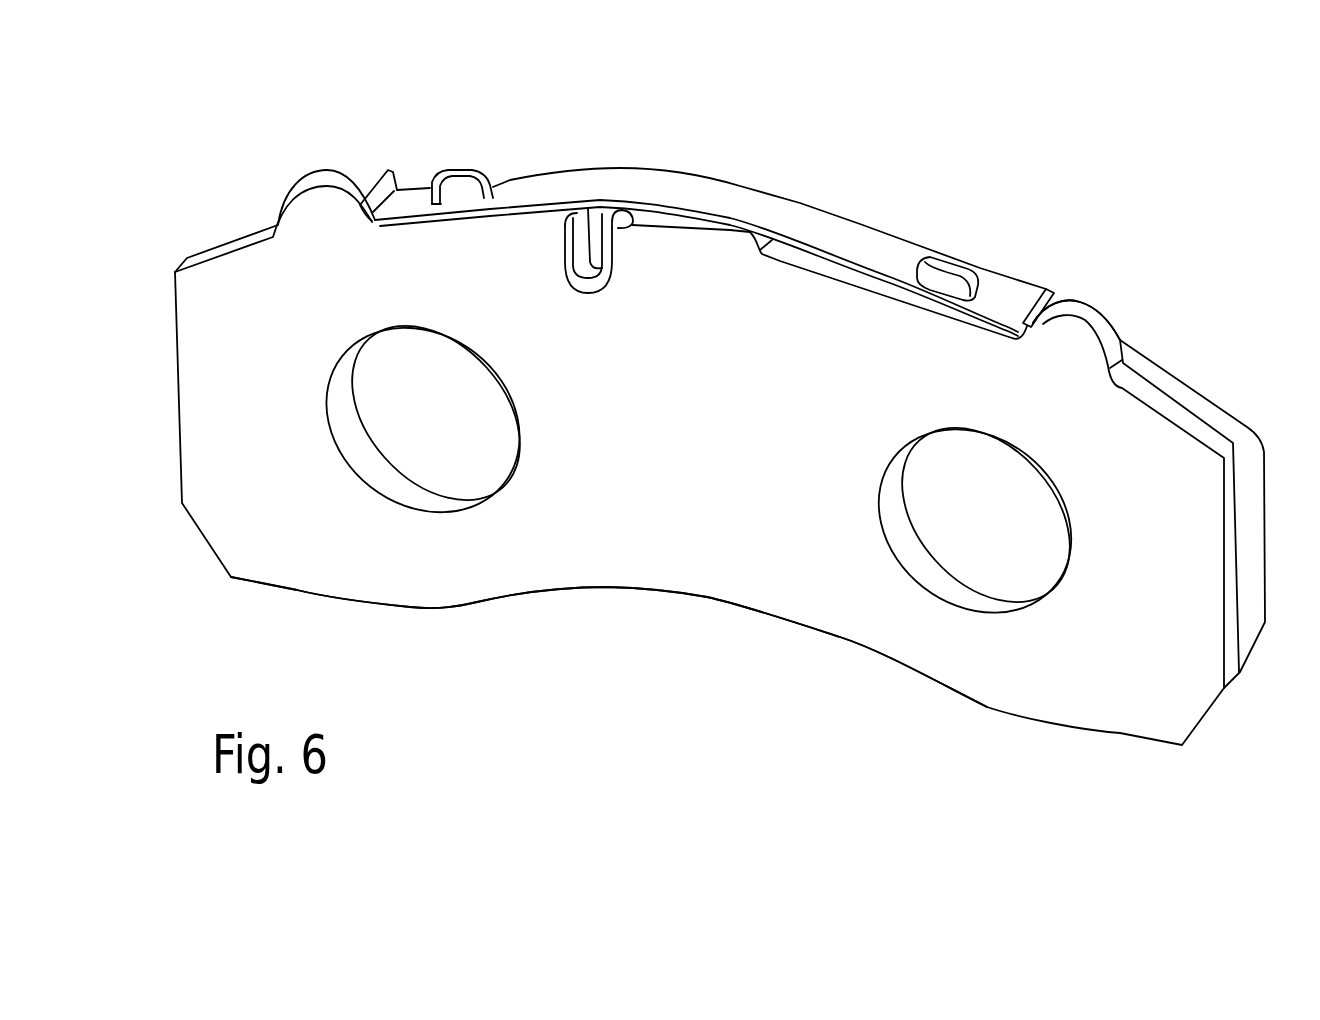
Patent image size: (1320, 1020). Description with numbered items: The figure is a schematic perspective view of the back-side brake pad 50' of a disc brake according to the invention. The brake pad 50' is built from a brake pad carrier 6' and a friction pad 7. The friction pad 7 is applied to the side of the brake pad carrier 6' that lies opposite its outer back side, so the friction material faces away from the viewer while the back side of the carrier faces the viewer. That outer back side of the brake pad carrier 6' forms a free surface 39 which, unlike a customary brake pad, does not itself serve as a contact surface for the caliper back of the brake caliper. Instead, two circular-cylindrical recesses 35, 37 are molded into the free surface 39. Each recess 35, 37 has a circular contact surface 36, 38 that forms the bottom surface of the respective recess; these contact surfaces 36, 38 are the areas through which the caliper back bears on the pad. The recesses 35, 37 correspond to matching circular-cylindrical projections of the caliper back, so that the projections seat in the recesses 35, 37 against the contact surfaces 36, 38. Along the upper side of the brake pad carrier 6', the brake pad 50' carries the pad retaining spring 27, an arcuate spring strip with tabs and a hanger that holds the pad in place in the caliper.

The pad retaining spring 27 is at (762, 204).
The back-side brake pad 50' is at (1036, 218).
The friction pad 7 is at (1150, 365).
The brake pad carrier 6' is at (714, 465).
The circular-cylindrical recess 35 is at (345, 462).
The circular contact surface 36 is at (434, 425).
The circular-cylindrical recess 37 is at (902, 565).
The circular contact surface 38 is at (1006, 545).
The free surface 39 is at (711, 460).